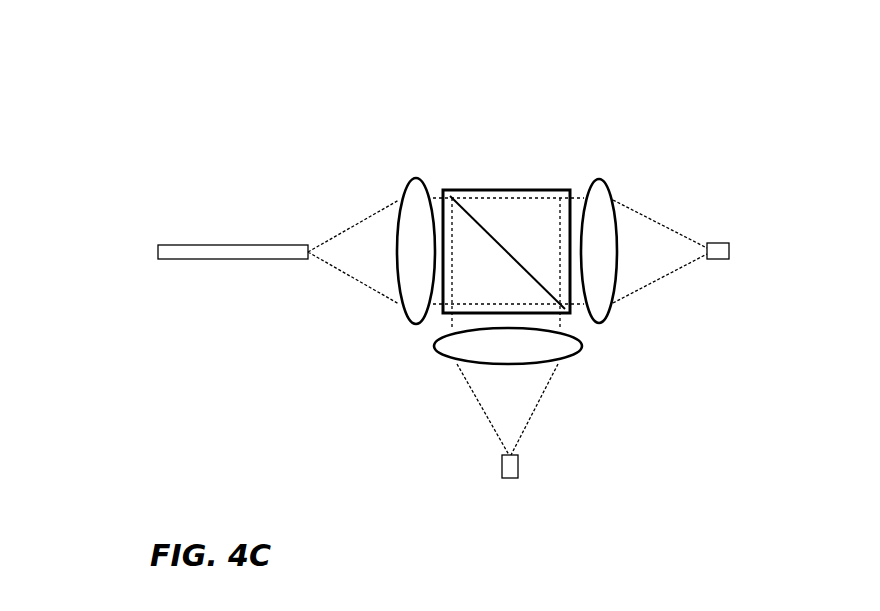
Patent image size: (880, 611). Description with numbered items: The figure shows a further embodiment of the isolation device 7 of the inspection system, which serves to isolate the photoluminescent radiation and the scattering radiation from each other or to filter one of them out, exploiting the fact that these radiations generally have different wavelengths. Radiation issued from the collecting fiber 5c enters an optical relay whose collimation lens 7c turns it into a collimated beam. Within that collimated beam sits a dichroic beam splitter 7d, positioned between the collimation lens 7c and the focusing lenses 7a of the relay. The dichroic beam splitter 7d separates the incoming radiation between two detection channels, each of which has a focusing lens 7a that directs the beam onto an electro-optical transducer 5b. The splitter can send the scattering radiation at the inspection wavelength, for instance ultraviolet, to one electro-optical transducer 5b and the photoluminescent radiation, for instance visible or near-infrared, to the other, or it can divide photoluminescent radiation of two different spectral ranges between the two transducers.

The isolation device 7 is at (572, 60).
The collecting fiber 5c is at (165, 245).
The collimation lens 7c is at (403, 193).
The dichroic beam splitter 7d is at (500, 190).
The focusing lens 7a is at (612, 303).
The electro-optical transducer 5b is at (729, 255).